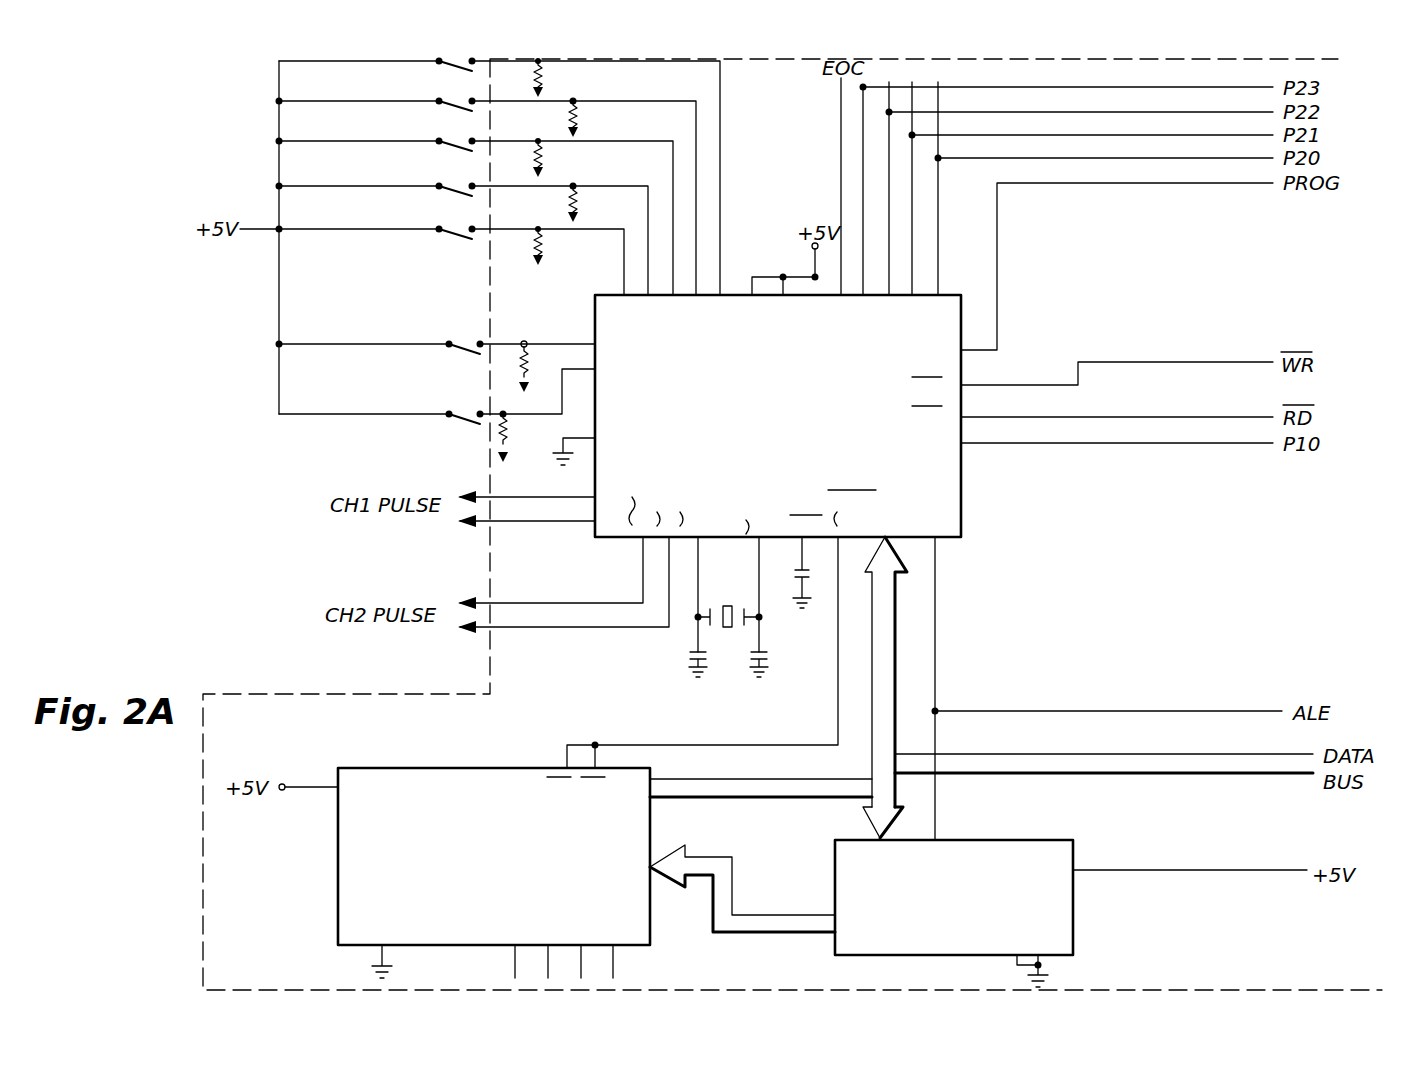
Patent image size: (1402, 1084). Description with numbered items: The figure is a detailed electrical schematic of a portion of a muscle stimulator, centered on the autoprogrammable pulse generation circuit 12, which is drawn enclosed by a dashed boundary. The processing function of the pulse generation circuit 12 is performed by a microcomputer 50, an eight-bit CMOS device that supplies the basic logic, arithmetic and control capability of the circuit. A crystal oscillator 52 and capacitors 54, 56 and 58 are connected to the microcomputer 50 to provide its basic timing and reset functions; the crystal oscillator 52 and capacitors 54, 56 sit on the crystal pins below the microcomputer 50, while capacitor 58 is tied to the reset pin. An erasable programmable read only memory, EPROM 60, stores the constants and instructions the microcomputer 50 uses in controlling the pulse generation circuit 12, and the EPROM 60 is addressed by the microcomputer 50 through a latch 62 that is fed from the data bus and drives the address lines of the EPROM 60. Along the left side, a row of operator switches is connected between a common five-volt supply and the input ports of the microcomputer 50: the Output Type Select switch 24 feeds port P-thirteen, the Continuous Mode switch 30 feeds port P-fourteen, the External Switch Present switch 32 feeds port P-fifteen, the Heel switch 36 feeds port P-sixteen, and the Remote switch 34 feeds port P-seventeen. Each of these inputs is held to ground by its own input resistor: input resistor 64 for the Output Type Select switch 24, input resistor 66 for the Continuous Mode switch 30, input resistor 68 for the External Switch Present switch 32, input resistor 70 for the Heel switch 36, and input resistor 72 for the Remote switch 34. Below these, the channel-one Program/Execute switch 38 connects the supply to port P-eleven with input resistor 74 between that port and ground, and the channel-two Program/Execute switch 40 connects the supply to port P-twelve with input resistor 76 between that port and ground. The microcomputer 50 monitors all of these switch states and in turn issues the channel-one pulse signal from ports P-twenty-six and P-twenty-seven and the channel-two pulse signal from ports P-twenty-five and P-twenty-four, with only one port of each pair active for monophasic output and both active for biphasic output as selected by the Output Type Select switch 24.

The autoprogrammable pulse generation circuit 12 is at (203, 868).
The Output Type Select switch 24 is at (430, 72).
The Continuous Mode switch 30 is at (430, 112).
The External Switch Present switch 32 is at (425, 152).
The Remote switch 34 is at (421, 241).
The Heel switch 36 is at (421, 198).
The Channel 1 Program/Execute switch 38 is at (440, 402).
The Channel 2 Program/Execute switch 40 is at (440, 332).
The microcomputer 50 is at (748, 292).
The crystal oscillator 52 is at (730, 632).
The capacitor 54 is at (770, 662).
The capacitor 56 is at (688, 657).
The capacitor 58 is at (798, 576).
The erasable programmable read only memory (EPROM) 60 is at (345, 882).
The latch 62 is at (1075, 930).
The input resistor 64 is at (548, 78).
The input resistor 66 is at (583, 118).
The input resistor 68 is at (548, 158).
The input resistor 70 is at (583, 203).
The input resistor 72 is at (548, 246).
The input resistor 74 is at (499, 438).
The input resistor 76 is at (520, 367).